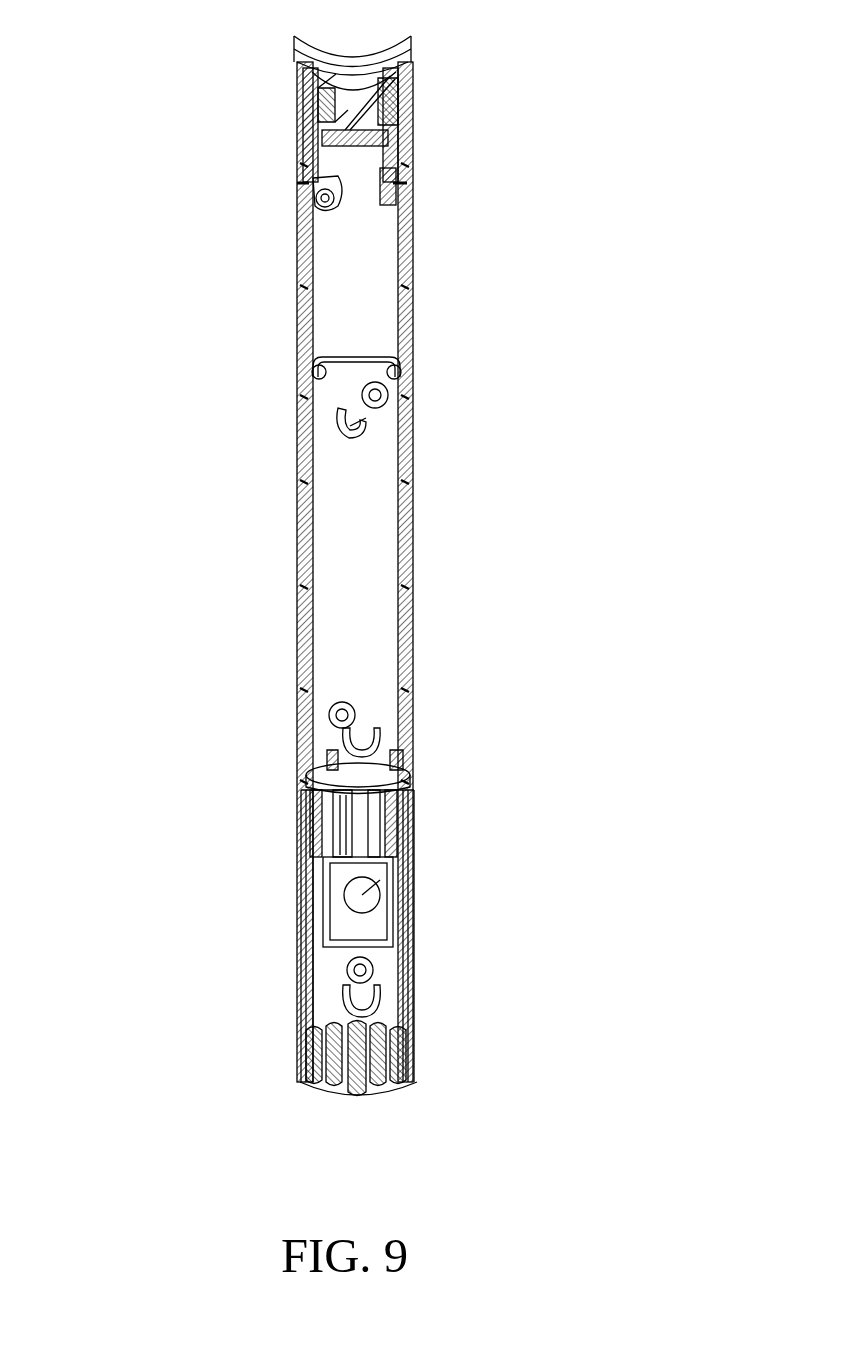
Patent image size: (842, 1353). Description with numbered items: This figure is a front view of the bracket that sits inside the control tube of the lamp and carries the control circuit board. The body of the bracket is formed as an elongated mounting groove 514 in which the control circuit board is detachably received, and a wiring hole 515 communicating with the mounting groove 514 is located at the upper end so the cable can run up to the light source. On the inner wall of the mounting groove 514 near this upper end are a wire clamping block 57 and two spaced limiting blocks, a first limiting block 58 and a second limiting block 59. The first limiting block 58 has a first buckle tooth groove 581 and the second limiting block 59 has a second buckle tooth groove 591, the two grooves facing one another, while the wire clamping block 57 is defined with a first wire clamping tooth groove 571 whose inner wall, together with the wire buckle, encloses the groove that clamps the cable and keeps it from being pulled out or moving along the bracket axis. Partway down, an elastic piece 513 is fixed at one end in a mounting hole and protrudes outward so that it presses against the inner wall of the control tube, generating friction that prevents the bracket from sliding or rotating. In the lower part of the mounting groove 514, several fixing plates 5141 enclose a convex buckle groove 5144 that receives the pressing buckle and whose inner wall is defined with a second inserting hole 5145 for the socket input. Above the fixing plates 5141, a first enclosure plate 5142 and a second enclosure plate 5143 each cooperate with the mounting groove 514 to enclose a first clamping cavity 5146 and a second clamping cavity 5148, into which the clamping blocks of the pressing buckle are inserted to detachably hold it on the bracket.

The mounting groove 514 is at (367, 530).
The wiring hole 515 is at (320, 85).
The first limiting block 58 is at (318, 133).
The first buckle tooth groove 581 is at (318, 168).
The wire clamping block 57 is at (402, 60).
The first wire clamping tooth groove 571 is at (402, 85).
The second limiting block 59 is at (402, 118).
The second buckle tooth groove 591 is at (402, 142).
The elastic piece 513 is at (362, 420).
The fixing plate 5141 is at (318, 915).
The first enclosure plate 5142 is at (318, 815).
The second enclosure plate 5143 is at (415, 787).
The buckle groove 5144 is at (318, 893).
The second inserting hole 5145 is at (413, 865).
The first clamping cavity 5146 is at (318, 845).
The second clamping cavity 5148 is at (415, 813).